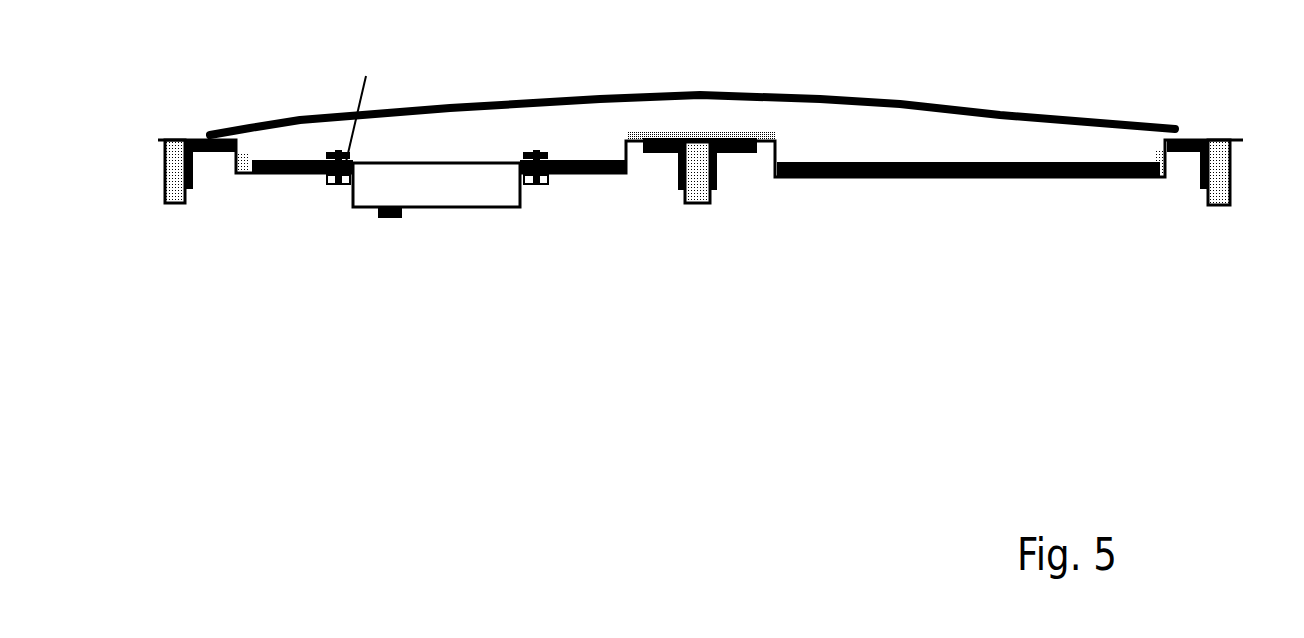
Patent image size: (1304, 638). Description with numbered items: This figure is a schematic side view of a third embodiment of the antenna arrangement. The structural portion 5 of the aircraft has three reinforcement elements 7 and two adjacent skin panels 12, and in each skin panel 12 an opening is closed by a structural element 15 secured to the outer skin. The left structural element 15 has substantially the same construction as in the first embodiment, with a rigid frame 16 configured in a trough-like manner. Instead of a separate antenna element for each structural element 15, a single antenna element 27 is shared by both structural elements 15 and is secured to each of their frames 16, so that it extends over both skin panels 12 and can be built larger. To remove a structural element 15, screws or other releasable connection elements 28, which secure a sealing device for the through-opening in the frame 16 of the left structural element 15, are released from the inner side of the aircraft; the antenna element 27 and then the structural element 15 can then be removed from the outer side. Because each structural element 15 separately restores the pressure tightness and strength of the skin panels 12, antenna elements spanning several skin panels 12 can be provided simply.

The structural portion 5 is at (1240, 180).
The reinforcement element 7 is at (175, 203).
The skin panel 12 is at (437, 81).
The structural element 15 is at (377, 254).
The rigid frame 16 is at (605, 173).
The antenna element 27 is at (862, 120).
The releasable connection element 28 is at (334, 188).